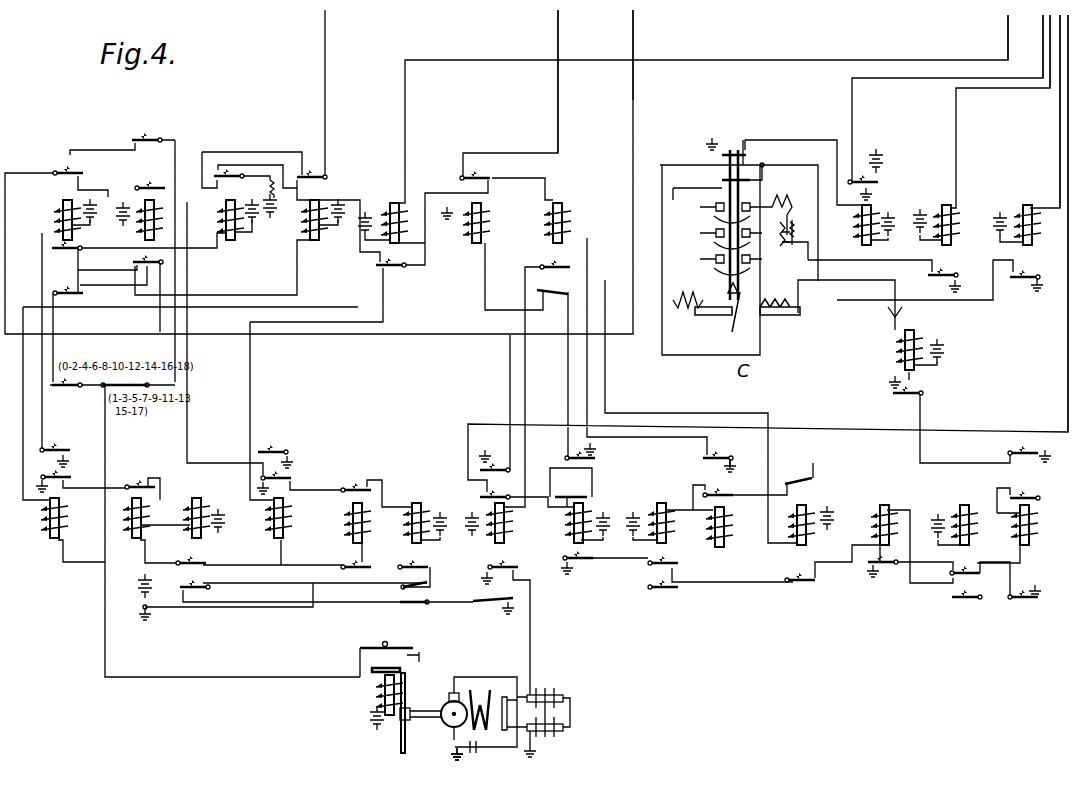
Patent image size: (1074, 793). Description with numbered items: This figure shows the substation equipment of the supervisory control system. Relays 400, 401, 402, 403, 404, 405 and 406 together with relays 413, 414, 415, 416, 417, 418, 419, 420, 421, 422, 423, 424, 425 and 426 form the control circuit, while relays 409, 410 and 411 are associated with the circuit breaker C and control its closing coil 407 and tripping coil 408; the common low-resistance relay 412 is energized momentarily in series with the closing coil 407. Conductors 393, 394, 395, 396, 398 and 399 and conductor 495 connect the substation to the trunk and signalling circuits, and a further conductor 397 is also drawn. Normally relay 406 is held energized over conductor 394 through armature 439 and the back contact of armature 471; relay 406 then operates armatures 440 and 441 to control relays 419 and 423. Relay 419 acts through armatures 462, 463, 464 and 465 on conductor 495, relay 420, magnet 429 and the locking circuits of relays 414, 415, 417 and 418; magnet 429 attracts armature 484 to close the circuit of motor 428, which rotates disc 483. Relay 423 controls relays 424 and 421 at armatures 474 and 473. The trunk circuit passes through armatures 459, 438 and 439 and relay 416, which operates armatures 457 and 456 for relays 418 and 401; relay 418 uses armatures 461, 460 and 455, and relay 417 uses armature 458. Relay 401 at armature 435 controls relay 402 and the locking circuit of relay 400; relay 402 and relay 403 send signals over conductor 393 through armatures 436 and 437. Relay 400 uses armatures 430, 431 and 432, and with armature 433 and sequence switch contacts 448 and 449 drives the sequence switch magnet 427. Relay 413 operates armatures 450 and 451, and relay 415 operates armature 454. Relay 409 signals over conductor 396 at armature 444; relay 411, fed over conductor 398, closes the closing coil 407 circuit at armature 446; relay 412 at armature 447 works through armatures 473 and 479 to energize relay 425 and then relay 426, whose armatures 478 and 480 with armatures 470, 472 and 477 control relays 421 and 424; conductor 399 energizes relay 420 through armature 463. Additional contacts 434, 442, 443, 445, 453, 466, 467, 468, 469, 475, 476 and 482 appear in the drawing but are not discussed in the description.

The conductor 393 is at (325, 22).
The conductor 394 is at (558, 22).
The conductor 495 is at (633, 30).
The conductor 395 is at (1008, 27).
The conductor 396 is at (1043, 27).
The conductor 397 is at (1050, 42).
The conductor 398 is at (1060, 66).
The conductor 399 is at (1068, 109).
The relay 400 is at (56, 209).
The relay 401 is at (155, 230).
The relay 402 is at (258, 238).
The relay 403 is at (315, 240).
The relay 404 is at (390, 203).
The relay 405 is at (480, 225).
The relay 406 is at (562, 228).
The closing coil 407 is at (695, 291).
The tripping coil 408 is at (752, 315).
The relay 409 is at (861, 235).
The relay 410 is at (942, 210).
The relay 411 is at (1023, 210).
The common relay 412 is at (913, 343).
The line relay 413 is at (41, 522).
The relay 414 is at (140, 520).
The relay 415 is at (202, 518).
The relay 416 is at (284, 522).
The relay 417 is at (350, 539).
The relay 418 is at (408, 520).
The relay 419 is at (512, 520).
The relay 420 is at (570, 540).
The starting relay 421 is at (653, 510).
The relay 422 is at (713, 528).
The relay 423 is at (805, 510).
The relay 424 is at (895, 505).
The relay 425 is at (965, 510).
The relay 426 is at (1020, 535).
The sequence switch magnet 427 is at (377, 706).
The motor 428 is at (455, 692).
The magnet 429 is at (560, 695).
The armature 430 is at (70, 170).
The armature 431 is at (50, 256).
The armature 432 is at (55, 291).
The armature 433 is at (149, 140).
The contact 434 is at (158, 177).
The armature 435 is at (153, 266).
The armature 436 is at (220, 175).
The armature 437 is at (302, 177).
The armature 438 is at (383, 266).
The armature 439 is at (474, 178).
The armature 440 is at (555, 263).
The armature 441 is at (560, 294).
The contact 442 is at (737, 150).
The contact 443 is at (746, 175).
The armature 444 is at (877, 178).
The contact 445 is at (944, 275).
The armature 446 is at (1023, 280).
The armature 447 is at (918, 392).
The sequence switch contact 448 is at (55, 387).
The sequence switch contact 449 is at (160, 388).
The armature 450 is at (58, 450).
The armature 451 is at (56, 478).
The battery 453 is at (142, 577).
The armature 454 is at (135, 485).
The armature 455 is at (185, 587).
The armature 456 is at (273, 450).
The armature 457 is at (290, 477).
The armature 458 is at (350, 488).
The armature 459 is at (355, 565).
The armature 460 is at (417, 566).
The armature 461 is at (378, 605).
The armature 462 is at (497, 465).
The armature 463 is at (490, 496).
The armature 464 is at (500, 560).
The armature 465 is at (480, 590).
The contact 466 is at (597, 460).
The contact 467 is at (572, 484).
The contact 468 is at (585, 560).
The contact 469 is at (658, 567).
The armature 470 is at (666, 595).
The armature 471 is at (727, 456).
The armature 472 is at (715, 490).
The armature 473 is at (790, 480).
The armature 474 is at (790, 580).
The contact 475 is at (885, 566).
The contact 476 is at (955, 575).
The armature 477 is at (962, 598).
The armature 478 is at (1015, 453).
The armature 479 is at (1035, 498).
The armature 480 is at (1014, 585).
The contact 482 is at (360, 668).
The disc 483 is at (400, 745).
The armature 484 is at (503, 728).